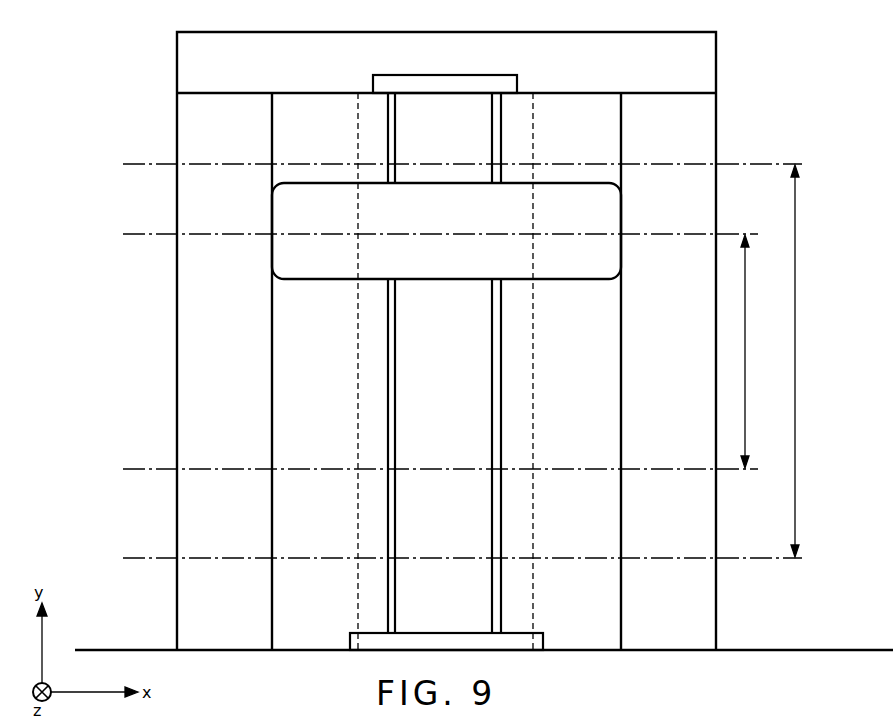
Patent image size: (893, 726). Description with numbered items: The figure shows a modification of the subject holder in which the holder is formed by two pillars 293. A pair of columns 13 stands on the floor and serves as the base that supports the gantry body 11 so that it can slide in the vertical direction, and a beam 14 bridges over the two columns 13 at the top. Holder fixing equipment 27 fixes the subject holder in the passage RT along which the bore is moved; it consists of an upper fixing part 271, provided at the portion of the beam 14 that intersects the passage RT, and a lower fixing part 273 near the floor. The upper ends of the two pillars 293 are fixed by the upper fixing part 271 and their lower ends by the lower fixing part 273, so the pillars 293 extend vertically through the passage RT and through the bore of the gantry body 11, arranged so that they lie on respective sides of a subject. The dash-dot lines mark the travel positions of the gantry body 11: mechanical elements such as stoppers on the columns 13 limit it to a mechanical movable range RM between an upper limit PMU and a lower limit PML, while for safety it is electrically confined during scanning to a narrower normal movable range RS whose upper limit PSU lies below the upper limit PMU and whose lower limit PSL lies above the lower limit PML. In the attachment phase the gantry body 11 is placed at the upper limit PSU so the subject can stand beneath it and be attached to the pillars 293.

The beam 14 is at (177, 64).
The column 13 is at (197, 606).
The gantry body 11 is at (285, 206).
The holder fixing equipment 27 is at (407, 358).
The upper fixing part 271 is at (373, 82).
The lower fixing part 273 is at (350, 640).
The pillars 293 is at (388, 130).
The passage RT is at (372, 371).
The upper limit of the mechanical movable range PMU is at (485, 165).
The upper limit of the normal movable range PSU is at (479, 235).
The lower limit of the normal movable range PSL is at (478, 474).
The lower limit of the mechanical movable range PML is at (485, 561).
The normal movable range RS is at (758, 351).
The mechanical movable range RM is at (810, 361).